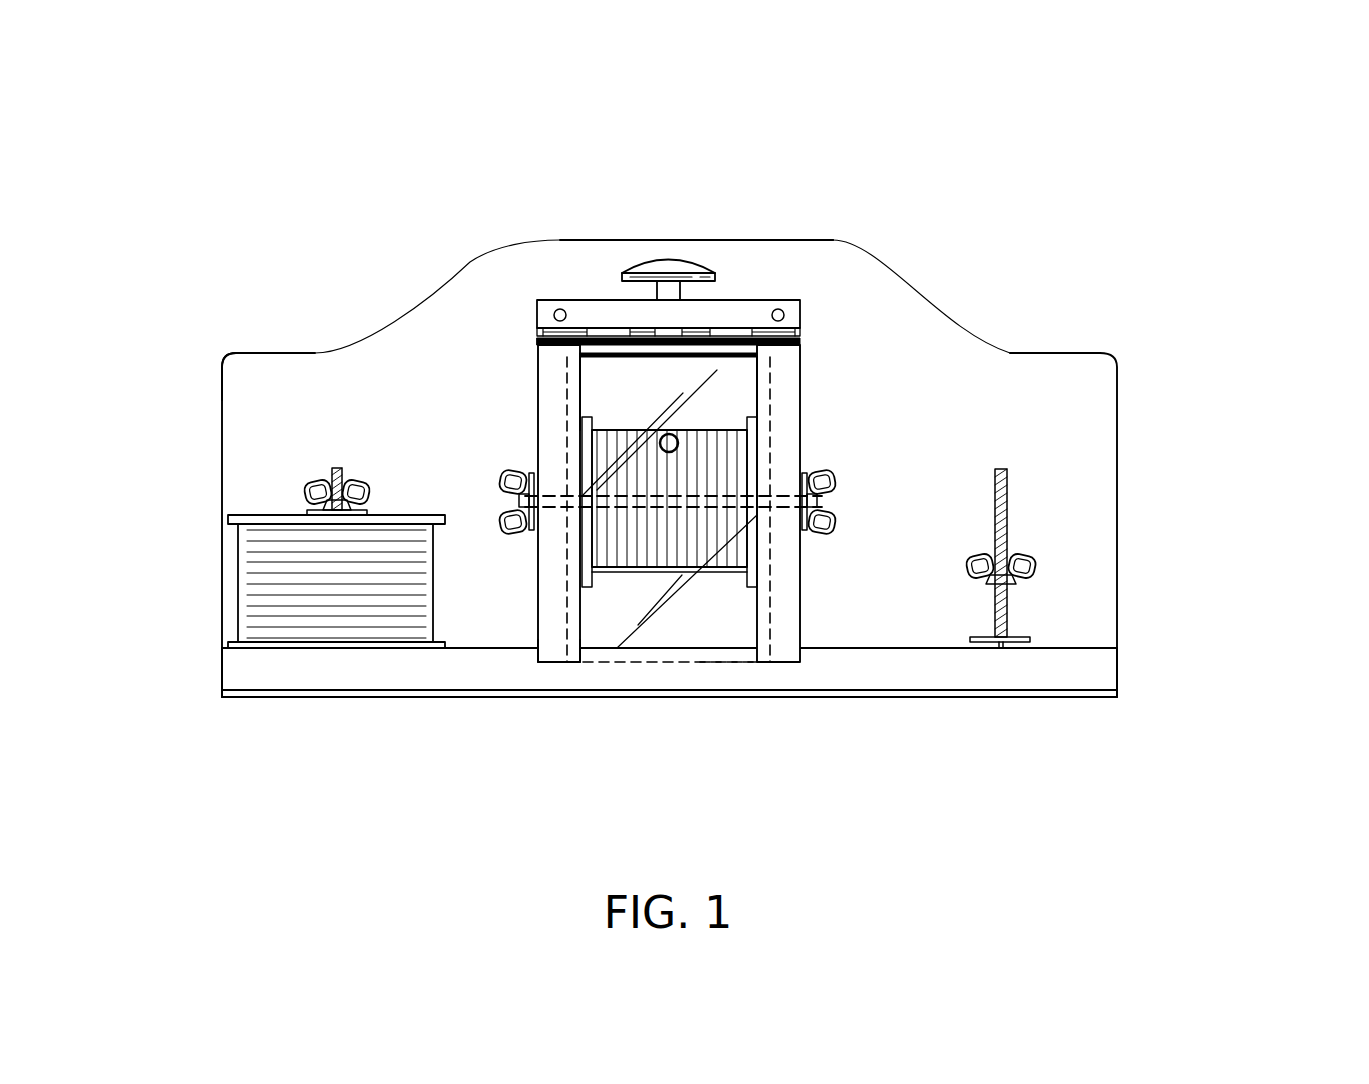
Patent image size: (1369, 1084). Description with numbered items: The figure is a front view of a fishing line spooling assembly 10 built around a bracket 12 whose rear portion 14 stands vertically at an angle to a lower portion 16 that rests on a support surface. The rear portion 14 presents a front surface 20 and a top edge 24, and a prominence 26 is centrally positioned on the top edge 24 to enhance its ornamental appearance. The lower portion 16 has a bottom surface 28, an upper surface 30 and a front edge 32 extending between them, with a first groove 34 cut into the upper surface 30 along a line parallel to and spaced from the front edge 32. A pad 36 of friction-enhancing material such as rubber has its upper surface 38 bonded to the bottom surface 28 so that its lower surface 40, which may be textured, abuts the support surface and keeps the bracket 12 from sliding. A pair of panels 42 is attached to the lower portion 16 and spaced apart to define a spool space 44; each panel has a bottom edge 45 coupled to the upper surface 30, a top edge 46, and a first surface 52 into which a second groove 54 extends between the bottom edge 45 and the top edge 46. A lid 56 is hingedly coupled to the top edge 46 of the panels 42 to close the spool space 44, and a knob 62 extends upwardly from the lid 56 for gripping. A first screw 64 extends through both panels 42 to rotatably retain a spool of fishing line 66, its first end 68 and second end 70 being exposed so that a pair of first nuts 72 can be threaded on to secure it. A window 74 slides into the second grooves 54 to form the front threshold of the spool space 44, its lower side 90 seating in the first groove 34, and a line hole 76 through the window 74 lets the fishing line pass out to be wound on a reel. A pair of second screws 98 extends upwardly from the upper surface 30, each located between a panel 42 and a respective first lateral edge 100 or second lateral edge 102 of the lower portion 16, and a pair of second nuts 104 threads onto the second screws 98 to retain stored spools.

The fishing line spooling assembly 10 is at (1078, 166).
The bracket 12 is at (1130, 410).
The rear portion 14 is at (225, 356).
The lower portion 16 is at (233, 640).
The front surface 20 is at (925, 352).
The top edge 24 is at (382, 320).
The prominence 26 is at (741, 226).
The bottom surface 28 is at (1055, 692).
The upper surface 30 is at (1090, 647).
The front edge 32 is at (1000, 670).
The first groove 34 is at (657, 650).
The pad 36 is at (862, 692).
The upper surface 38 is at (1120, 650).
The lower surface 40 is at (1108, 697).
The panels 42 is at (538, 372).
The spool space 44 is at (624, 392).
The bottom edge 45 is at (551, 662).
The top edge 46 is at (552, 345).
The first surface 52 is at (668, 343).
The second groove 54 is at (574, 630).
The lid 56 is at (720, 345).
The knob 62 is at (645, 258).
The first screw 64 is at (720, 507).
The spool of fishing line 66 is at (757, 465).
The first end 68 is at (500, 479).
The second end 70 is at (833, 497).
The first nuts 72 is at (512, 532).
The window 74 is at (670, 353).
The line hole 76 is at (669, 468).
The lower side 90 is at (740, 663).
The second screws 98 is at (335, 470).
The first lateral edge 100 is at (222, 664).
The second lateral edge 102 is at (1103, 696).
The second nuts 104 is at (310, 480).